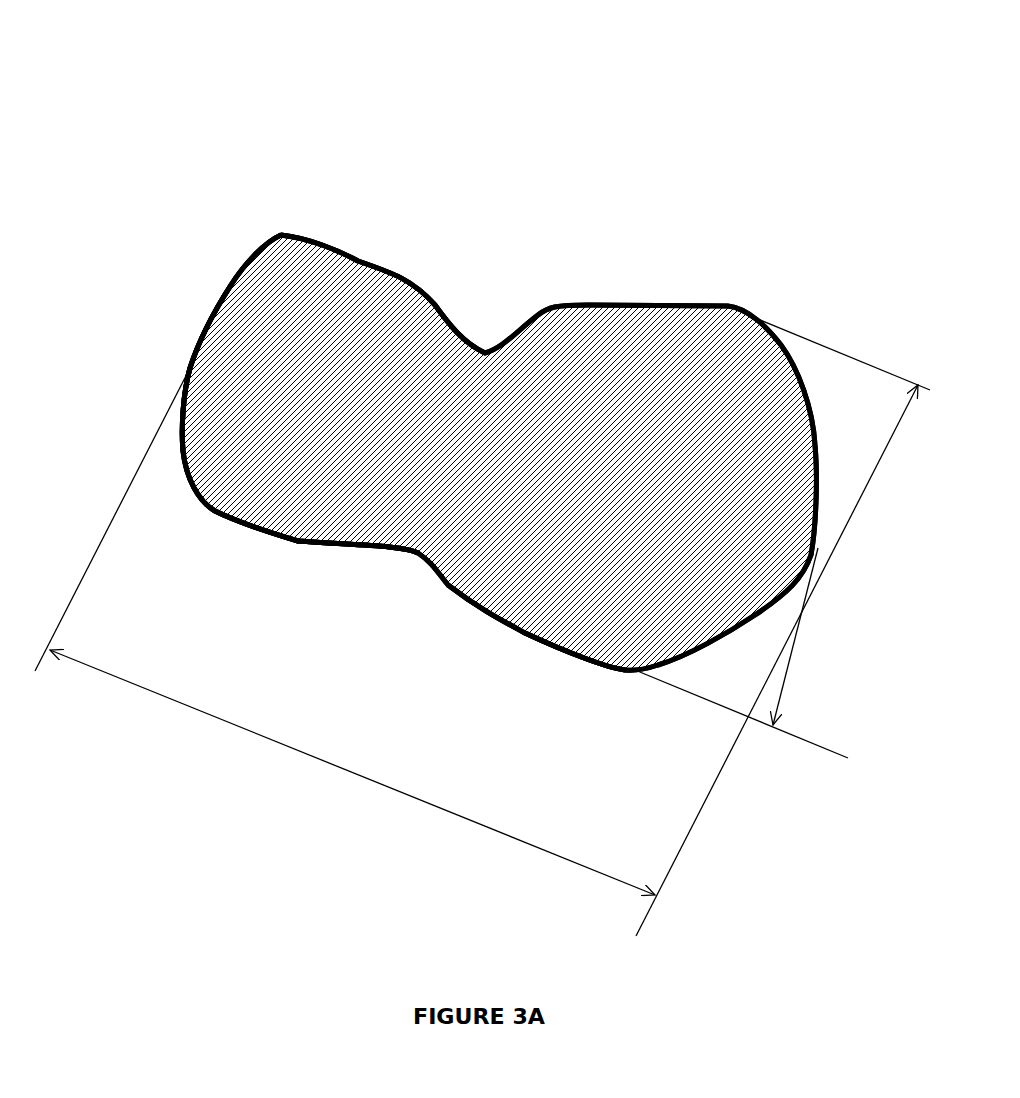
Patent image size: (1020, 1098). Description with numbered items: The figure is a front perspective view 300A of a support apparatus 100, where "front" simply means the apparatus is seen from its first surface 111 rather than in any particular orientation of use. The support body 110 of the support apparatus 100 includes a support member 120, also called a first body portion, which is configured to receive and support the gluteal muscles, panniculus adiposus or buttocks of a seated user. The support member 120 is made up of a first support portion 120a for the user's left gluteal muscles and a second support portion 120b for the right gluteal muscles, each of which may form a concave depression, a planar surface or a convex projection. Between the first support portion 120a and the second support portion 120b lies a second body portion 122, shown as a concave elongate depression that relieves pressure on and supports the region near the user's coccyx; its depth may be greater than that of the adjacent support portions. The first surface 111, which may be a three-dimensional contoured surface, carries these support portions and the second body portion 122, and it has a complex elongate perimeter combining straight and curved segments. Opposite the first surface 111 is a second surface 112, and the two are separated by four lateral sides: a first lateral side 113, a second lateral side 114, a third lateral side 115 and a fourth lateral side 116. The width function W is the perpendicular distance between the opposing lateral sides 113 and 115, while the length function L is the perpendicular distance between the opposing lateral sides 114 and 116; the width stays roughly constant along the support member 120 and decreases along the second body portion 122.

The front perspective view 300A is at (42, 92).
The support apparatus 100 is at (677, 357).
The support body 110 is at (278, 280).
The first surface 111 is at (300, 375).
The second surface 112 is at (577, 292).
The first lateral side 113 is at (350, 247).
The second lateral side 114 is at (805, 433).
The third lateral side 115 is at (517, 625).
The fourth lateral side 116 is at (222, 282).
The support member 120 is at (318, 490).
The first support portion 120a is at (625, 517).
The second support portion 120b is at (285, 415).
The second body portion 122 is at (475, 340).